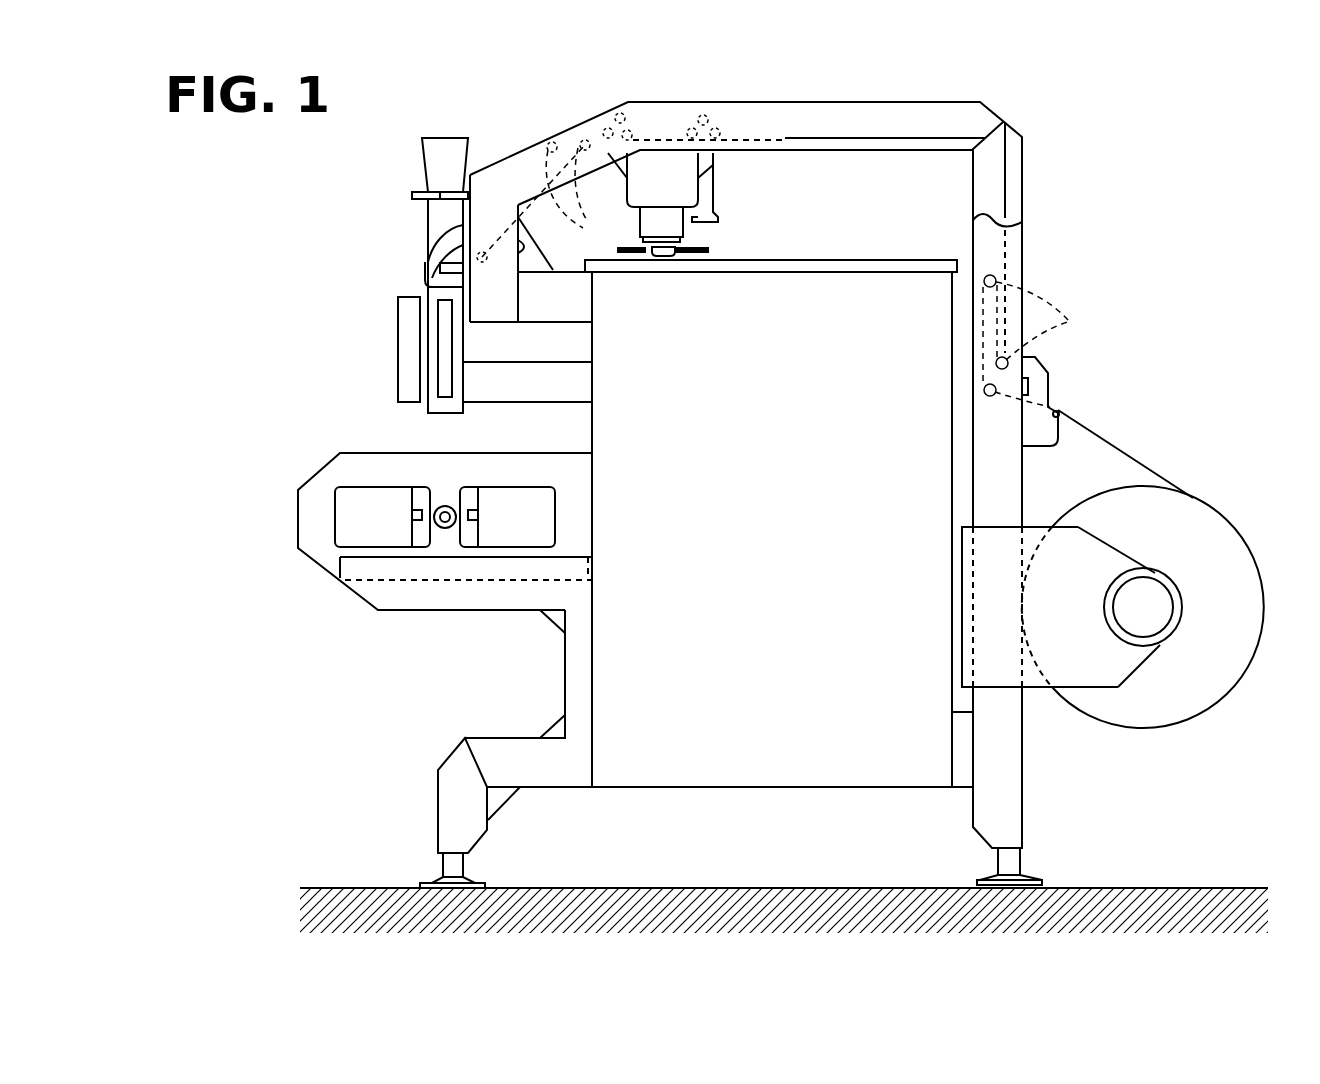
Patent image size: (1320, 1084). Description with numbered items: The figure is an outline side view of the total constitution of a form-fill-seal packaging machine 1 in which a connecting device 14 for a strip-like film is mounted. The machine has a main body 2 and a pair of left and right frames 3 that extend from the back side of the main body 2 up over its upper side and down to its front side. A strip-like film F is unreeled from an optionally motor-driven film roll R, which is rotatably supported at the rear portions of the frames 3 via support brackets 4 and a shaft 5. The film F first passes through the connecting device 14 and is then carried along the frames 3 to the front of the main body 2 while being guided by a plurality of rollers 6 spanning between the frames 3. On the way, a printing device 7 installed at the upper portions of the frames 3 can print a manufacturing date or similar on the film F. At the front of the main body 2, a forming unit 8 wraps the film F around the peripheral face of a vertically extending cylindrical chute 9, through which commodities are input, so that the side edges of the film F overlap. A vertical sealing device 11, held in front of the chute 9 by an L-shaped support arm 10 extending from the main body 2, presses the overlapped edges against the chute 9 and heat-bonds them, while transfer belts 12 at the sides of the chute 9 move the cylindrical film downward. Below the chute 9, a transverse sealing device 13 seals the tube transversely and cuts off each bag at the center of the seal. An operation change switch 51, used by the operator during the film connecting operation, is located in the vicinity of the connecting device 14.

The form-fill-seal packaging machine 1 is at (322, 220).
The main body 2 is at (860, 280).
The frames 3 is at (1012, 198).
The support brackets 4 is at (1032, 533).
The shaft 5 is at (1153, 623).
The rollers 6 is at (1065, 140).
The printing device 7 is at (685, 192).
The forming unit 8 is at (440, 238).
The cylindrical chute 9 is at (463, 347).
The L-shaped support arm 10 is at (523, 393).
The vertical sealing device 11 is at (407, 342).
The transfer belts 12 is at (447, 377).
The transverse sealing device 13 is at (313, 568).
The connecting device 14 is at (1074, 404).
The operation change switch 51 is at (1033, 380).
The film F is at (1150, 470).
The film roll R is at (1215, 520).